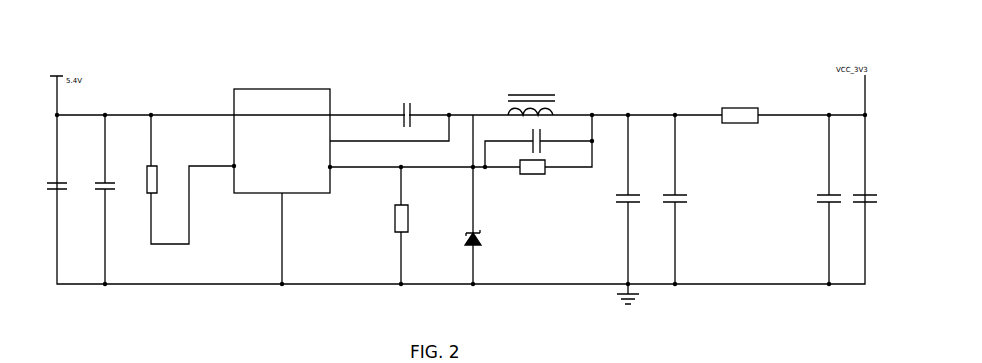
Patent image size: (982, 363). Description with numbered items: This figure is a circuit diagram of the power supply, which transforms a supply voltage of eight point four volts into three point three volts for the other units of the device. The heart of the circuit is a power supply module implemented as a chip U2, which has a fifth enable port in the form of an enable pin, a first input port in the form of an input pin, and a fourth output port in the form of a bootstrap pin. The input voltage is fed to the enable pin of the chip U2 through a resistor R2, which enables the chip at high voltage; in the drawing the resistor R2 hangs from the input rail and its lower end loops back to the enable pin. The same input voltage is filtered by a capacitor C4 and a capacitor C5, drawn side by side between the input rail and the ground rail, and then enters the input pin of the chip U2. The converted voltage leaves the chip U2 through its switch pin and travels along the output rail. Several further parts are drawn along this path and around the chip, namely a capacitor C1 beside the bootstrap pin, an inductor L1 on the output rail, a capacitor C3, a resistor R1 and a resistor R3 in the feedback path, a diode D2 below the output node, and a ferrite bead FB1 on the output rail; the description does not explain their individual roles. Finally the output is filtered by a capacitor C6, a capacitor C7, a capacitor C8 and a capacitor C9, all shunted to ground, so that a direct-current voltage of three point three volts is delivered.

The capacitor C4 is at (59, 180).
The capacitor C5 is at (107, 199).
The resistor R2 is at (190, 179).
The chip U2 is at (282, 177).
The bootstrap capacitor C1 is at (413, 111).
The inductor L1 is at (521, 105).
The feedback capacitor C3 is at (538, 145).
The feedback resistor R1 is at (538, 144).
The feedback resistor R3 is at (407, 225).
The zener diode D2 is at (479, 234).
The capacitor C6 is at (620, 199).
The capacitor C7 is at (681, 199).
The ferrite bead FB1 is at (740, 109).
The capacitor C8 is at (825, 199).
The capacitor C9 is at (861, 192).